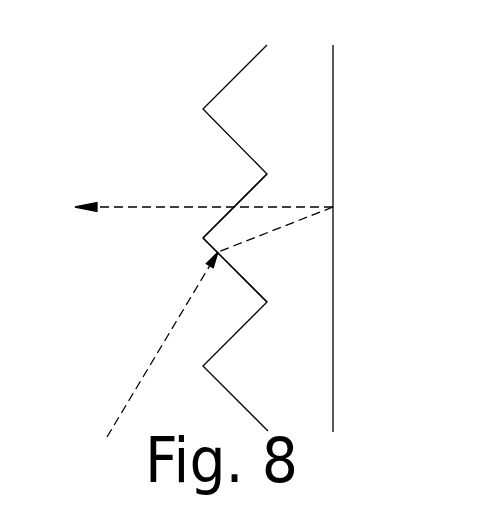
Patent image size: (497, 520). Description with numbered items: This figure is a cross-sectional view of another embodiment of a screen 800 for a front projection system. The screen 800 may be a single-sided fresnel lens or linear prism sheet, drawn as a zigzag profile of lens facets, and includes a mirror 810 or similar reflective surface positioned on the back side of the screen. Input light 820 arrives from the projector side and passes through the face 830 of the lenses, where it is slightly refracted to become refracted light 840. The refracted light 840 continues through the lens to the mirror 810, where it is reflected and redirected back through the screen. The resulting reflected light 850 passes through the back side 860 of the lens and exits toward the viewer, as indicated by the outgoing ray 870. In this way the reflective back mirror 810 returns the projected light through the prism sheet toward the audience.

The screen 800 is at (298, 134).
The mirror 810 is at (333, 148).
The input light 820 is at (118, 413).
The face of the lenses 830 is at (255, 292).
The refracted light 840 is at (275, 230).
The reflected light 850 is at (283, 205).
The back side of the lens 860 is at (244, 196).
The light directed toward the viewer 870 is at (122, 207).